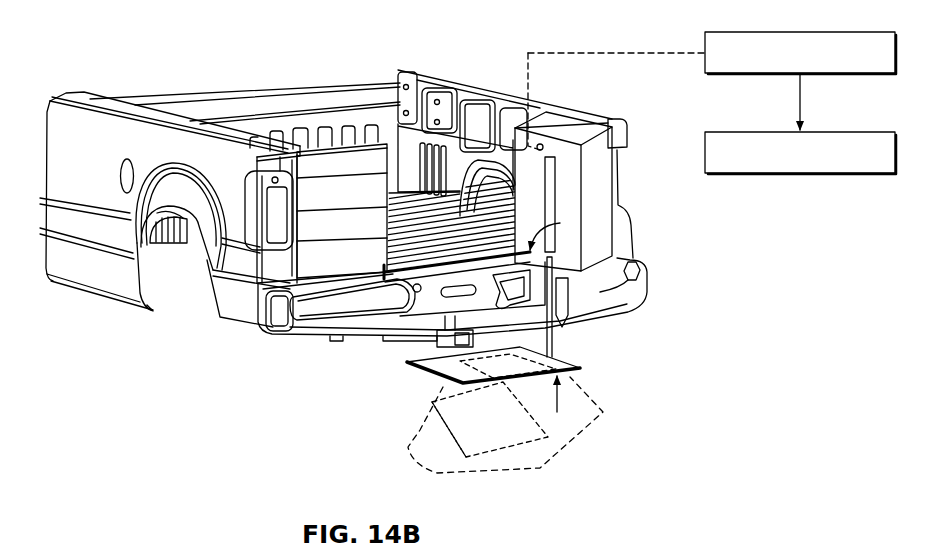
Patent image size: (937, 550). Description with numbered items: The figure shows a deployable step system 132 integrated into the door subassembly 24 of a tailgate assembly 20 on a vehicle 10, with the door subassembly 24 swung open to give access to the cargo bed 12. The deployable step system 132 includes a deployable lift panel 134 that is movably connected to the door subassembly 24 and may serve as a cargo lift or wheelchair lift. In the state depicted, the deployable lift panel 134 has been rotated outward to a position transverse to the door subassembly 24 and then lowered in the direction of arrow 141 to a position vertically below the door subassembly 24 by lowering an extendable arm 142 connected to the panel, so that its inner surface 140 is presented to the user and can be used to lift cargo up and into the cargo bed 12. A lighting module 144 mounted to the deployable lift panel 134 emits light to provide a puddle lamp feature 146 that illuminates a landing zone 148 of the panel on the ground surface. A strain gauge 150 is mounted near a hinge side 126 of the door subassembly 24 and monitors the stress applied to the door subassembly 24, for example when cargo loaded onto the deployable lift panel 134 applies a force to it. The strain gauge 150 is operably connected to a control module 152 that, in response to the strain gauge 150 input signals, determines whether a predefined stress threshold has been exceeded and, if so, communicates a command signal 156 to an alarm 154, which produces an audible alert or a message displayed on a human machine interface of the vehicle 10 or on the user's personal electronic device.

The vehicle 10 is at (522, 40).
The cargo bed 12 is at (452, 188).
The tailgate assembly 20 is at (606, 124).
The door subassembly 24 is at (608, 187).
The hinge side 126 is at (470, 227).
The deployable step system 132 is at (492, 412).
The deployable lift panel 134 is at (455, 364).
The inner surface 140 is at (560, 394).
The arrow 141 is at (580, 306).
The extendable arm 142 is at (553, 338).
The lighting module 144 is at (508, 378).
The puddle lamp feature 146 is at (427, 467).
The landing zone 148 is at (480, 450).
The strain gauge 150 is at (541, 145).
The control module 152 is at (832, 32).
The alarm 154 is at (832, 132).
The command signal 156 is at (795, 98).